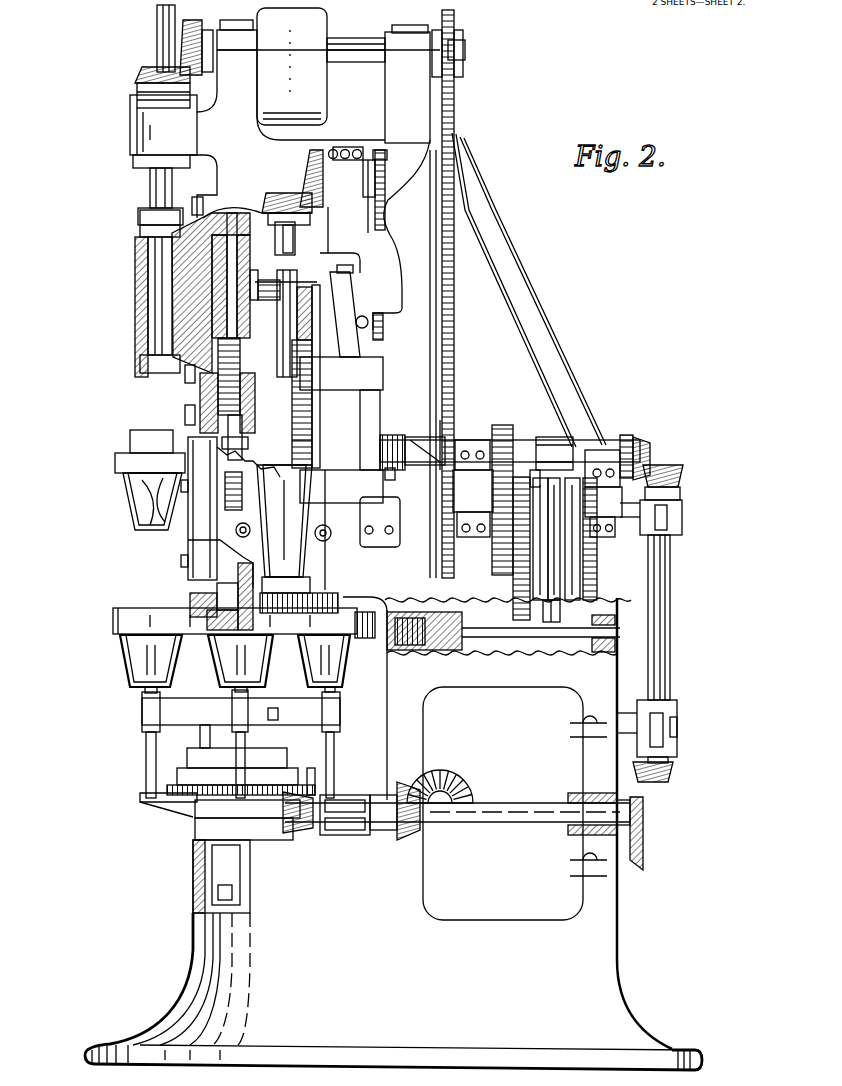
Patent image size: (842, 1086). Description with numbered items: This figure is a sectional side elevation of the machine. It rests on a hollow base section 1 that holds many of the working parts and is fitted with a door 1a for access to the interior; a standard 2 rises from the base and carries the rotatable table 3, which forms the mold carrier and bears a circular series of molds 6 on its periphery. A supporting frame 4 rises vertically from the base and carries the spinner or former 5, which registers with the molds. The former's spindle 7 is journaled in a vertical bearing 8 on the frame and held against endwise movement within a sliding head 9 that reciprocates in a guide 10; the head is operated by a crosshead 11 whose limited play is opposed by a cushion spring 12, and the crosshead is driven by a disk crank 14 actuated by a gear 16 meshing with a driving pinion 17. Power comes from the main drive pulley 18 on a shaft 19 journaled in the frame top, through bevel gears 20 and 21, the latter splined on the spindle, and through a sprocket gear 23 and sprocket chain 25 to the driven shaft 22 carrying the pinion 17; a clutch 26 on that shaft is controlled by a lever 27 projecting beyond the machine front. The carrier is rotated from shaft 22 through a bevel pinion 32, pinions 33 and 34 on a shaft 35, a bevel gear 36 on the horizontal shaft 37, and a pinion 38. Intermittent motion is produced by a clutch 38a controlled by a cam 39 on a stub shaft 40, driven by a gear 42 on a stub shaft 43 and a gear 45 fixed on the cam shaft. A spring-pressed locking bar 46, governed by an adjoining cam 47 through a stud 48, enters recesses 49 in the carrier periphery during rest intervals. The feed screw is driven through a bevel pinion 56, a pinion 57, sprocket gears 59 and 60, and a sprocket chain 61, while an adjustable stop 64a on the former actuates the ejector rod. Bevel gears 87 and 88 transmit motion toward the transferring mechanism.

The base section 1 is at (393, 834).
The door 1a is at (563, 917).
The standard 2 is at (273, 733).
The table 3 is at (110, 621).
The supporting frame 4 is at (220, 160).
The spinner or former 5 is at (128, 482).
The molds 6 is at (132, 682).
The spindle 7 is at (182, 158).
The vertical bearing 8 is at (130, 132).
The sliding head 9 is at (170, 337).
The guide 10 is at (193, 538).
The crosshead 11 is at (207, 293).
The cushion spring 12 is at (217, 380).
The disk crank 14 is at (280, 350).
The gear 16 is at (313, 392).
The driving pinion 17 is at (293, 459).
The main drive pulley 18 is at (315, 74).
The shaft 19 is at (341, 46).
The bevel gear 20 is at (190, 23).
The bevel gear 21 is at (137, 77).
The driven shaft 22 is at (420, 437).
The sprocket gear 23 is at (463, 70).
The sprocket chain 25 is at (454, 290).
The clutch 26 is at (417, 448).
The lever 27 is at (390, 477).
The bevel pinion 32 is at (643, 440).
The bevel pinion 33 is at (682, 475).
The bevel pinion 34 is at (673, 762).
The shaft 35 is at (670, 645).
The bevel gear 36 is at (643, 845).
The horizontal shaft 37 is at (553, 813).
The pinion 38 is at (305, 828).
The clutch 38a is at (543, 437).
The cam 39 is at (570, 553).
The stub shaft 40 is at (620, 540).
The gear 42 is at (510, 433).
The stub shaft 43 is at (583, 453).
The gear 45 is at (613, 435).
The locking bar 46 is at (617, 637).
The cam 47 is at (587, 578).
The stud 48 is at (557, 620).
The recesses 49 is at (370, 630).
The bevel pinion 56 is at (273, 193).
The pinion 57 is at (313, 153).
The sprocket gear 59 is at (385, 153).
The sprocket gear 60 is at (383, 435).
The sprocket chain 61 is at (385, 222).
The adjustable stop 64a is at (193, 420).
The bevel gear 87 is at (407, 843).
The bevel gear 88 is at (473, 783).